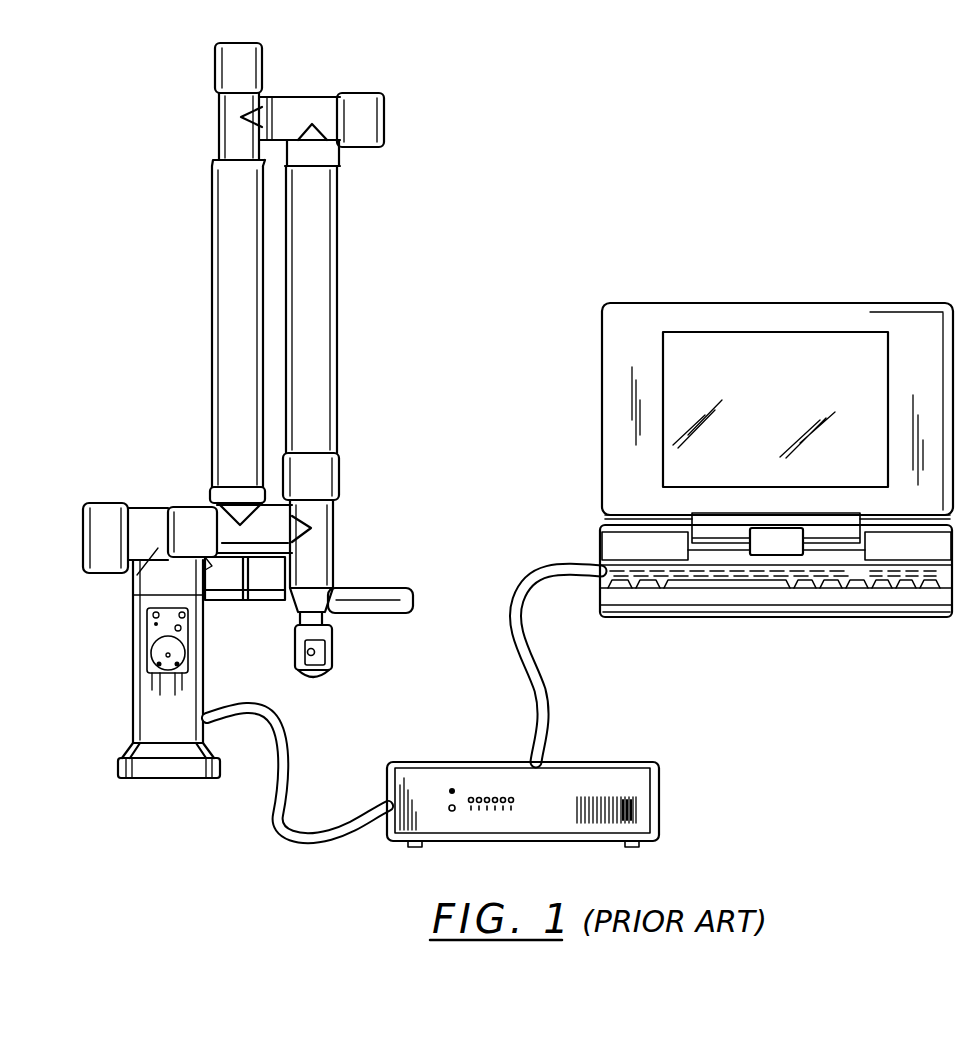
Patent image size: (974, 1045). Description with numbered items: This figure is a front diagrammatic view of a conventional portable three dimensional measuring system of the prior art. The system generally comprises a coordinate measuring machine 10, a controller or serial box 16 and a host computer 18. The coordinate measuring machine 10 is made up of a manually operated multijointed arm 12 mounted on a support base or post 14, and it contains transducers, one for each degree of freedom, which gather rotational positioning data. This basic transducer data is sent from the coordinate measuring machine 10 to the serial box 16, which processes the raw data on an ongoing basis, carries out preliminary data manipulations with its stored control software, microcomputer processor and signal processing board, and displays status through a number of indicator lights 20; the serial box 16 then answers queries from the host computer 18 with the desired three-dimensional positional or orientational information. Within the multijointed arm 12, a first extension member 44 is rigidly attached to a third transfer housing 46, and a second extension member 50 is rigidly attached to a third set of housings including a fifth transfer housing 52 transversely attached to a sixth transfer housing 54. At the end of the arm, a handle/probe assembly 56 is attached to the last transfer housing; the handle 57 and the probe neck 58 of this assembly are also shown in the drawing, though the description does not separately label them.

The coordinate measuring machine 10 is at (416, 321).
The multijointed arm 12 is at (341, 257).
The support base 14 is at (131, 650).
The serial box 16 is at (651, 762).
The host computer 18 is at (739, 303).
The indicator lights 20 is at (491, 812).
The first extension member 44 is at (339, 386).
The third transfer housing 46 is at (326, 97).
The second extension member 50 is at (211, 347).
The fifth transfer housing 52 is at (185, 506).
The sixth transfer housing 54 is at (334, 540).
The handle/probe assembly 56 is at (337, 652).
The handle 57 is at (393, 591).
The probe neck 58 is at (297, 620).